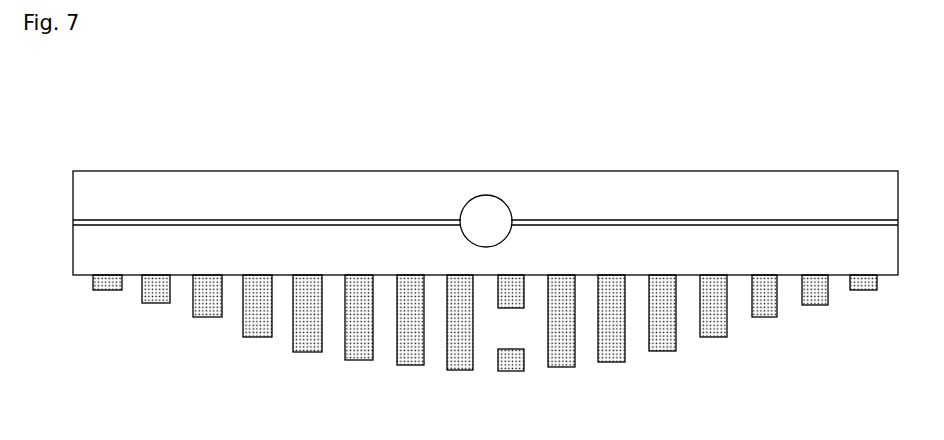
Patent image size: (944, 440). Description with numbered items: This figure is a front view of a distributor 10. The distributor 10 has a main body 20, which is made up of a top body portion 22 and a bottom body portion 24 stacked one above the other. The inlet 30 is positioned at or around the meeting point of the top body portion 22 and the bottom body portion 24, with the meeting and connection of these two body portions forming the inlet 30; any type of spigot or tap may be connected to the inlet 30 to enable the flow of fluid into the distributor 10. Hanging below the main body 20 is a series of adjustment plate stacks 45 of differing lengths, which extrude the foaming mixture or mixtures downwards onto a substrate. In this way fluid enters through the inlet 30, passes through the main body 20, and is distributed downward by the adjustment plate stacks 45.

The distributor 10 is at (483, 221).
The main body 20 is at (783, 193).
The top body portion 22 is at (143, 210).
The bottom body portion 24 is at (141, 258).
The inlet 30 is at (487, 197).
The adjustment plate stacks 45 is at (473, 268).